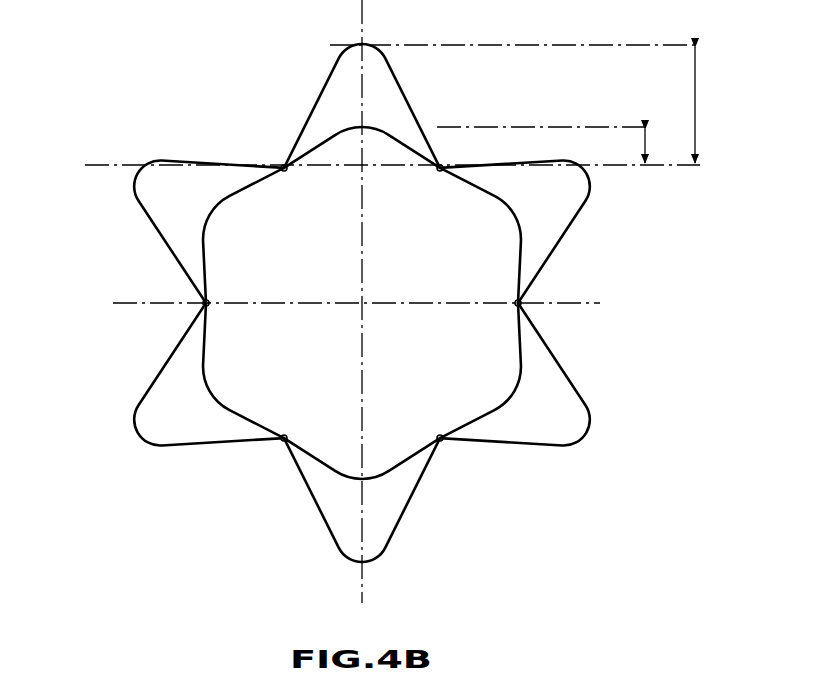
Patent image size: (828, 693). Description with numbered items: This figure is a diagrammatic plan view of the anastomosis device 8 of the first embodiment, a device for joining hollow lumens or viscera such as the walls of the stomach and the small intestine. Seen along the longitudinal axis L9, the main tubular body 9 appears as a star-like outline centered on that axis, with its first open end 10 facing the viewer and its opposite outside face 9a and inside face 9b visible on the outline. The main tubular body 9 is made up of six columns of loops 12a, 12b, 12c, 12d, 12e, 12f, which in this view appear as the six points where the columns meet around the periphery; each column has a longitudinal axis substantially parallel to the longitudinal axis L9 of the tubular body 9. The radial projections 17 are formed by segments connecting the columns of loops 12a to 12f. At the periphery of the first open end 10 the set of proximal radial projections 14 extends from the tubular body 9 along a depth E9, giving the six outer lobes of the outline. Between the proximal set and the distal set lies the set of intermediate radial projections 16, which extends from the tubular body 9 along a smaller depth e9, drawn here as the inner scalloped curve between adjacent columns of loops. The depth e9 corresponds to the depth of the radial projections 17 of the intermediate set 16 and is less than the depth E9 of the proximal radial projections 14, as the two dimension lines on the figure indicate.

The anastomosis device 8 is at (205, 100).
The main tubular body 9 is at (525, 309).
The outside face 9a is at (460, 167).
The inside face 9b is at (513, 322).
The first open end 10 is at (420, 392).
The column of loops 12a is at (283, 160).
The column of loops 12b is at (445, 167).
The column of loops 12c is at (521, 300).
The column of loops 12d is at (442, 440).
The column of loops 12e is at (282, 440).
The column of loops 12f is at (203, 301).
The proximal radial projections 14 is at (393, 63).
The intermediate radial projections 16 is at (353, 124).
The radial projections 17 is at (362, 290).
The depth of proximal and distal radial projections E9 is at (404, 105).
The depth of intermediate radial projections e9 is at (556, 145).
The longitudinal axis of the tubular body L9 is at (360, 300).